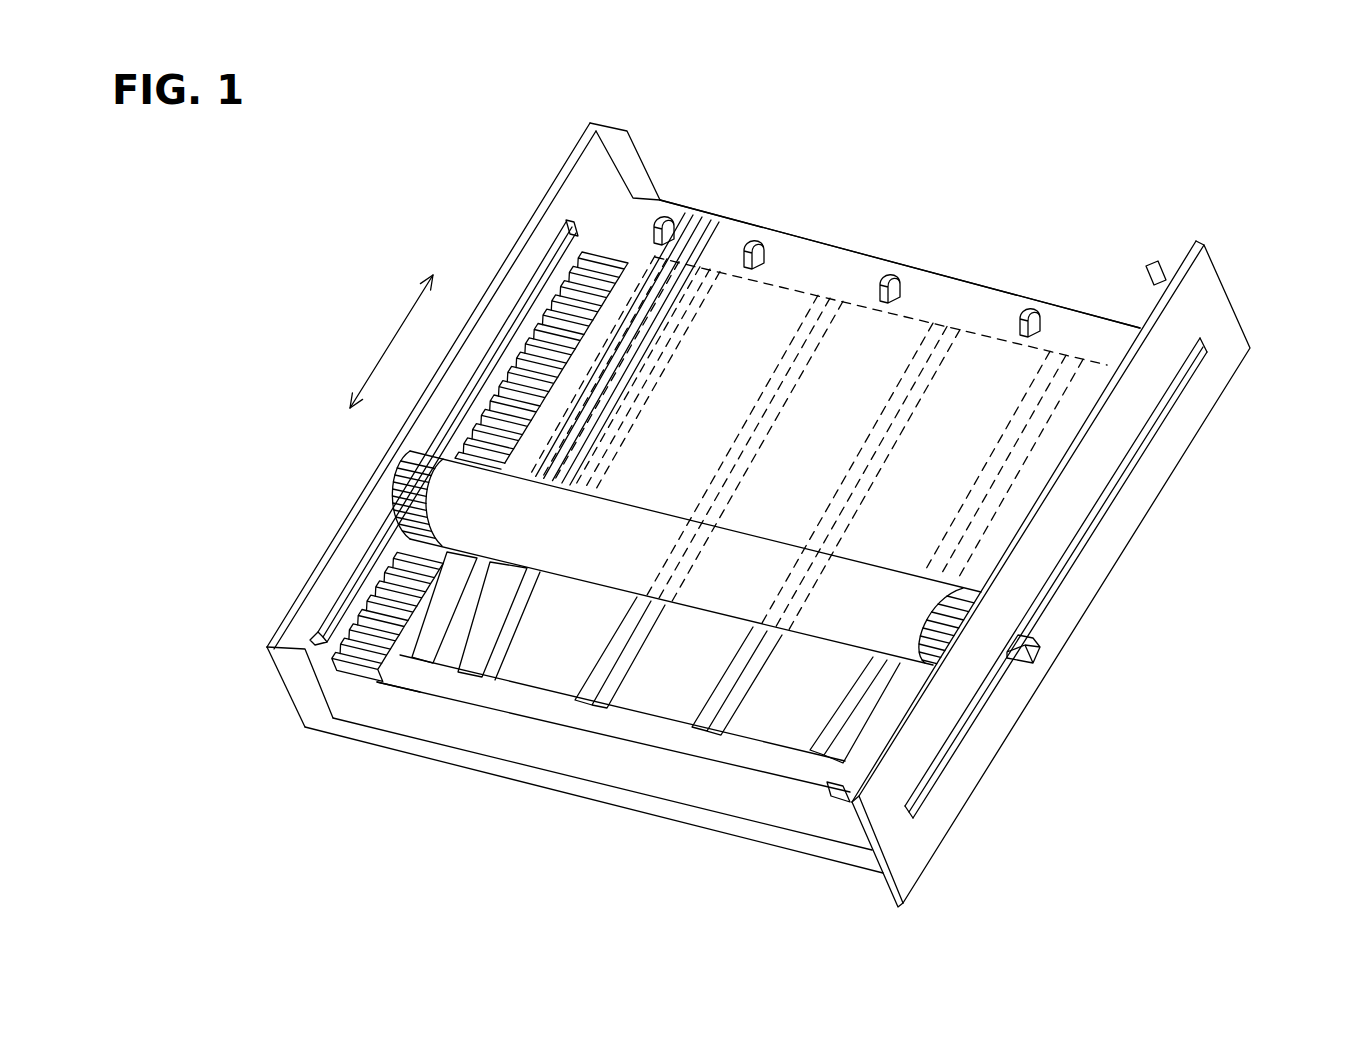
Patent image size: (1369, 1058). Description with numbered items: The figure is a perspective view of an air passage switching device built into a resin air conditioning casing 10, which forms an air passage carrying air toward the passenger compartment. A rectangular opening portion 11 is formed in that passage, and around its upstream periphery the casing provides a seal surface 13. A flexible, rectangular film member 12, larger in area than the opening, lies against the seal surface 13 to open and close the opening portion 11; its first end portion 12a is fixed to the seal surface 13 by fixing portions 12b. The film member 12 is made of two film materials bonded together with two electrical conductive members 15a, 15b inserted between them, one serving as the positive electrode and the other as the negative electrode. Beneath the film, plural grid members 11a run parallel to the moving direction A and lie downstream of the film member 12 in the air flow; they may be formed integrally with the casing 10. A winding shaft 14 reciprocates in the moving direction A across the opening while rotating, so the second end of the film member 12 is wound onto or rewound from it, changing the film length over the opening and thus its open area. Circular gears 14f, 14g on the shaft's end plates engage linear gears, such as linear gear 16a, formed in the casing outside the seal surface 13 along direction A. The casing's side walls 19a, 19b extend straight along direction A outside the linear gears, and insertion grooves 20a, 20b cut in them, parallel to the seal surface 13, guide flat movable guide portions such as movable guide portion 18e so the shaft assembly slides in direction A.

The air conditioning casing 10 is at (1168, 487).
The opening portion 11 is at (666, 683).
The grid members 11a is at (600, 652).
The film member 12 is at (740, 373).
The first end portion 12a is at (865, 253).
The fixing portions 12b is at (883, 277).
The seal surface 13 is at (415, 617).
The winding shaft 14 is at (812, 647).
The circular gear 14f is at (393, 483).
The circular gear 14g is at (965, 587).
The electrical conductive member 15a is at (733, 233).
The electrical conductive member 15b is at (730, 237).
The linear gear 16a is at (535, 328).
The movable guide portion 18e is at (1040, 655).
The side wall 19a is at (543, 200).
The side wall 19b is at (1180, 317).
The insertion groove 20a is at (497, 343).
The insertion groove 20b is at (978, 727).
The moving direction A is at (372, 348).